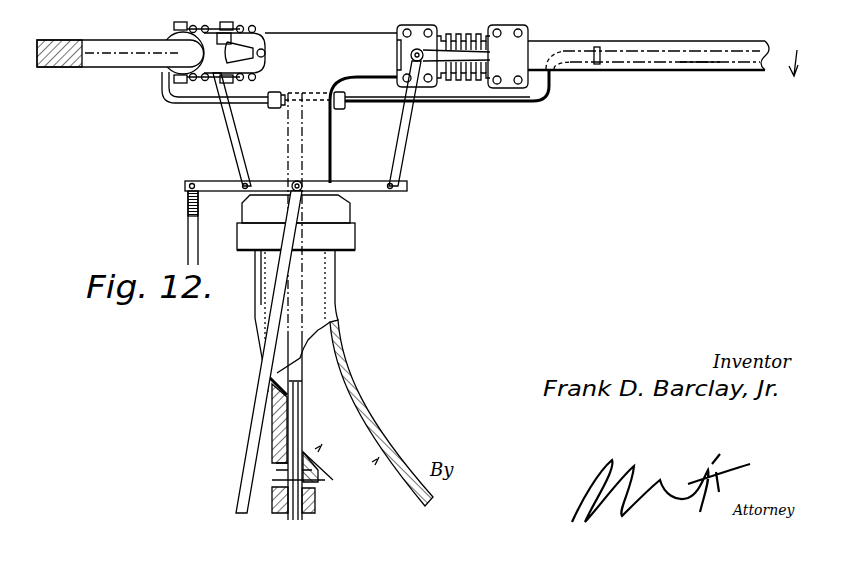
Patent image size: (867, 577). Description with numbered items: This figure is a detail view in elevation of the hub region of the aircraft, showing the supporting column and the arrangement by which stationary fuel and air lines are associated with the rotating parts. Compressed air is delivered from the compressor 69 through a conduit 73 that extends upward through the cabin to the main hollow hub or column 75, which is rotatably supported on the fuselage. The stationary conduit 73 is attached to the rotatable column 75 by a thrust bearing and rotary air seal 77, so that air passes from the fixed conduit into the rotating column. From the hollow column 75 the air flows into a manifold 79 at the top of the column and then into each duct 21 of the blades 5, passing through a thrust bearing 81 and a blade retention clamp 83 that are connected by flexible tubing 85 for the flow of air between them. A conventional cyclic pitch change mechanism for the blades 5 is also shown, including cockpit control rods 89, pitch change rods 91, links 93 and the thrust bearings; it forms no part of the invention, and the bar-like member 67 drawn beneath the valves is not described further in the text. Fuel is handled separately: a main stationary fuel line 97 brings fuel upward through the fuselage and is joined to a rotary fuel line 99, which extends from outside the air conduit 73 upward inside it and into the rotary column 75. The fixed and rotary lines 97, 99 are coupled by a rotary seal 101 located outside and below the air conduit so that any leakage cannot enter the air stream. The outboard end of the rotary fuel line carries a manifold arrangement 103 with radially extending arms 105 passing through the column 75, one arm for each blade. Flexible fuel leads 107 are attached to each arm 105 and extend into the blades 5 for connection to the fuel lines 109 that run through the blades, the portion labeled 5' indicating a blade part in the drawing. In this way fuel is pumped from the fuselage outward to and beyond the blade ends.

The blade 5 is at (120, 60).
The pipe 5' is at (639, 84).
The duct 21 is at (548, 48).
The bar 67 is at (217, 182).
The compressor 69 is at (249, 434).
The air conduit 73 is at (368, 419).
The hollow hub or column 75 is at (329, 152).
The thrust bearing and rotary air seal 77 is at (353, 223).
The manifold 79 is at (306, 43).
The thrust bearing 81 is at (247, 31).
The blade retention clamp 83 is at (205, 70).
The flexible tubing 85 is at (465, 37).
The cockpit control rod 89 is at (192, 232).
The pitch change rod 91 is at (228, 127).
The link 93 is at (467, 56).
The stationary fuel line 97 is at (285, 516).
The rotary fuel line 99 is at (303, 382).
The rotary seal 101 is at (277, 472).
The manifold arrangement 103 is at (318, 79).
The radially extending arm 105 is at (277, 108).
The flexible fuel lead 107 is at (162, 88).
The fuel line 109 is at (695, 63).